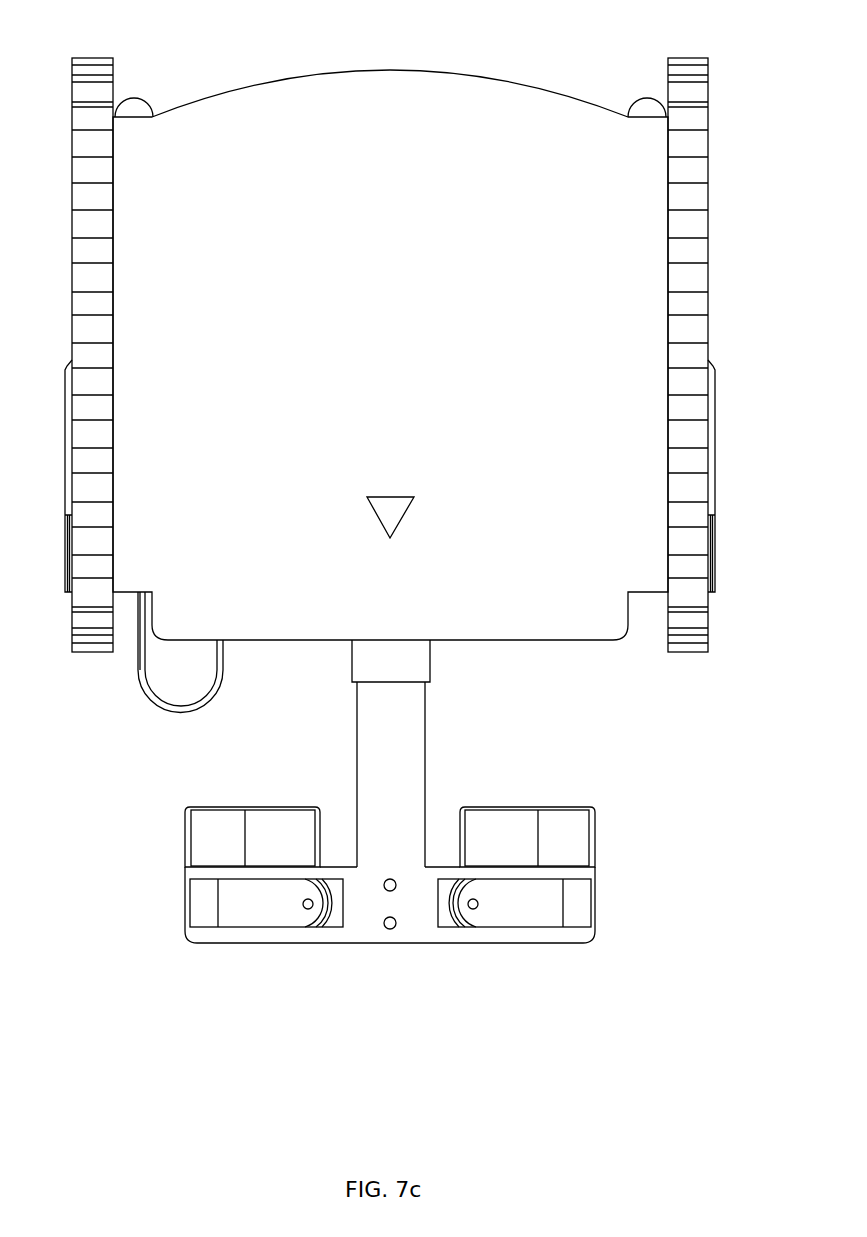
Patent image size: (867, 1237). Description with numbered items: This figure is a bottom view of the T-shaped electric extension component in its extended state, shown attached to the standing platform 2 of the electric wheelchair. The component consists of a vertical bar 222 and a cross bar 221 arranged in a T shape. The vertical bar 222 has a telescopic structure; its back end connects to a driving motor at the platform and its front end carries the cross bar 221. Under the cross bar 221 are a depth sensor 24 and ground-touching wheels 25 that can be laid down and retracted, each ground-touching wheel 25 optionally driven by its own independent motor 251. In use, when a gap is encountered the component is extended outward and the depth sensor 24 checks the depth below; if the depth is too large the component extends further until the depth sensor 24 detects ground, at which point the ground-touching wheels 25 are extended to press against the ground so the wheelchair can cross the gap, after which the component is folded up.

The standing platform 2 is at (405, 145).
The vertical bar 222 is at (412, 760).
The cross bar 221 is at (485, 937).
The independent motor 251 is at (203, 843).
The ground-touching wheel 25 is at (253, 912).
The depth sensor 24 is at (385, 880).